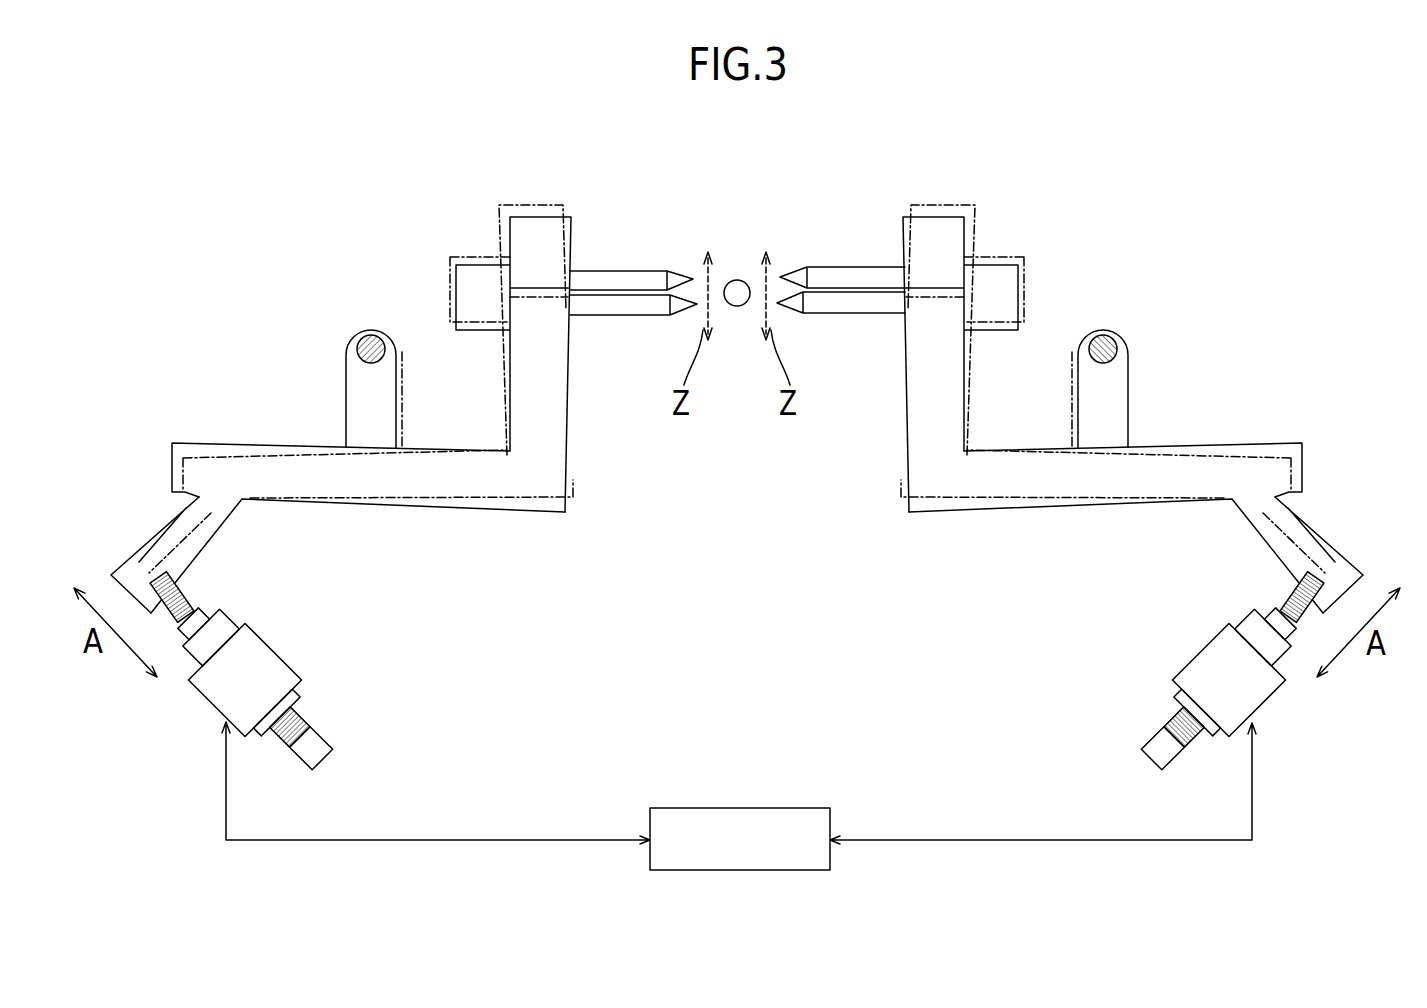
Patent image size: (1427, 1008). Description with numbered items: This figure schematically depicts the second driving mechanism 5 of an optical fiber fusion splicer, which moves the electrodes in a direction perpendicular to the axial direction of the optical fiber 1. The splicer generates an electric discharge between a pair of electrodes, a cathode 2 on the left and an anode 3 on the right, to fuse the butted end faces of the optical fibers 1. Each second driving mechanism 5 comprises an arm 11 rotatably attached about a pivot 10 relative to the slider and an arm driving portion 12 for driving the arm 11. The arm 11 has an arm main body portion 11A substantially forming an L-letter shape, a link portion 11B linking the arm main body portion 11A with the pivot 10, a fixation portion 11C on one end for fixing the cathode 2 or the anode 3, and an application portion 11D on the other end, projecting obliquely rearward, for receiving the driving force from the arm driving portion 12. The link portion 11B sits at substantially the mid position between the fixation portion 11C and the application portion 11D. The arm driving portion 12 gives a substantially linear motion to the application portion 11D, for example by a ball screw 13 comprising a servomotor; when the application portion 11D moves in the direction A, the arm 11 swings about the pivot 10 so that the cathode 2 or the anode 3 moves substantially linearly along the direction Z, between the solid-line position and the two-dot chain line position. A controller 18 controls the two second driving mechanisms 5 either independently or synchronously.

The optical fiber 1 is at (737, 308).
The cathode 2 is at (623, 308).
The anode 3 is at (842, 308).
The second driving mechanism 5 is at (737, 380).
The pivot 10 is at (738, 300).
The arm 11 is at (737, 380).
The arm main body portion 11A is at (737, 528).
The link portion 11B is at (741, 389).
The fixation portion 11C is at (737, 316).
The application portion 11D is at (1340, 558).
The arm driving portion 12 is at (1268, 692).
The ball screw 13 is at (1295, 592).
The controller 18 is at (775, 808).